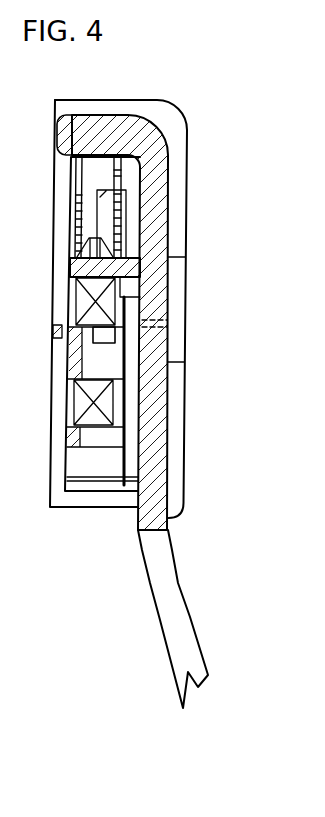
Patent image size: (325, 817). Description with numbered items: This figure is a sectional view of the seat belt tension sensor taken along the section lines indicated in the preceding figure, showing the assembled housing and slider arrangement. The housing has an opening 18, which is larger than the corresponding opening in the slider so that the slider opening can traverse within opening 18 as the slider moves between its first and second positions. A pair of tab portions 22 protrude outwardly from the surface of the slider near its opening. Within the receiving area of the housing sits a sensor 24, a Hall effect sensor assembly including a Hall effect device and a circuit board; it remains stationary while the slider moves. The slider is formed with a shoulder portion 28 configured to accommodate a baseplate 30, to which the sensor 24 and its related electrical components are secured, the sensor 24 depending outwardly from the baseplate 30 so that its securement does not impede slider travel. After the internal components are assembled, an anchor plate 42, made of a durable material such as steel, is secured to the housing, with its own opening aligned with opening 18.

The opening 18 is at (170, 363).
The tab portions 22 is at (53, 330).
The sensor 24 is at (169, 319).
The shoulder portion 28 is at (121, 308).
The baseplate 30 is at (142, 382).
The anchor plate 42 is at (181, 572).